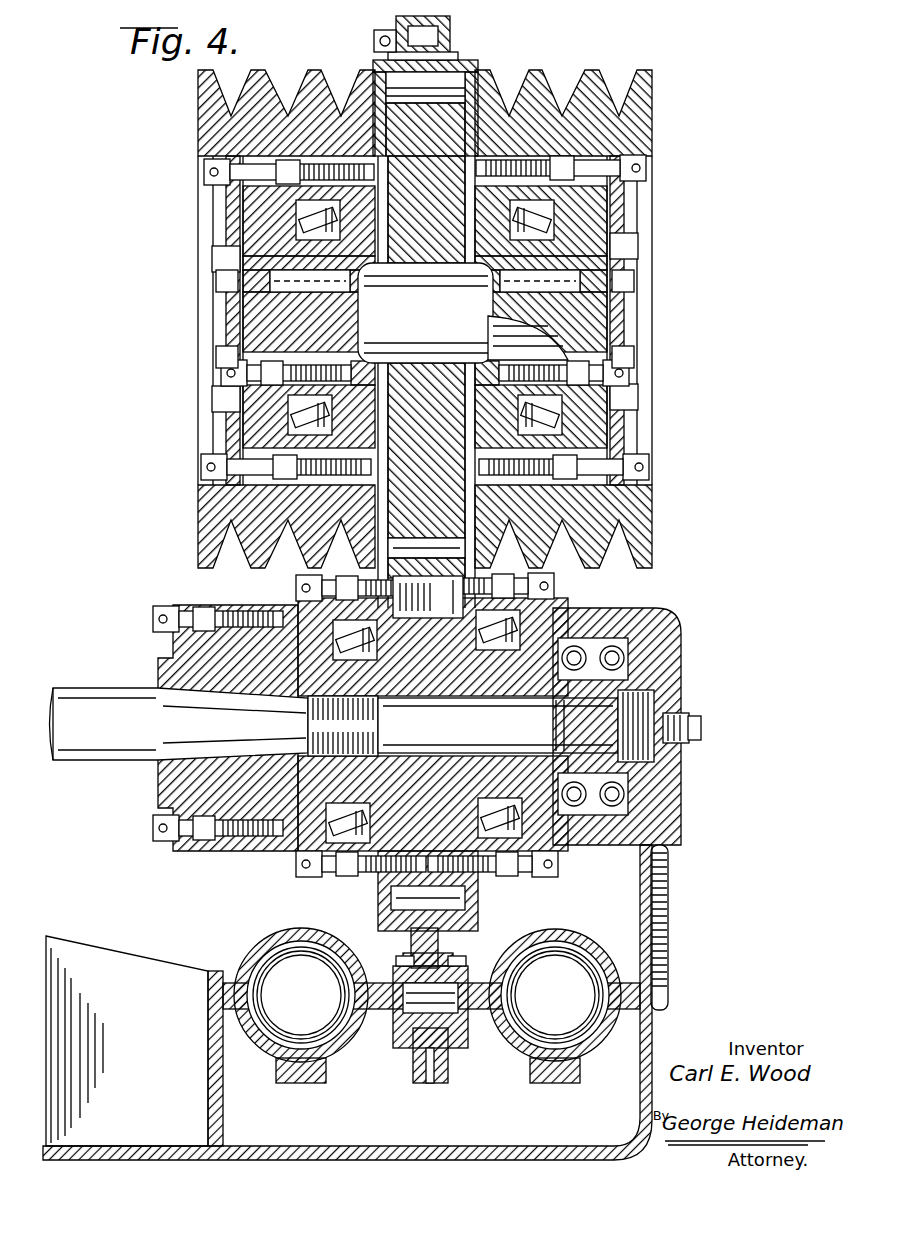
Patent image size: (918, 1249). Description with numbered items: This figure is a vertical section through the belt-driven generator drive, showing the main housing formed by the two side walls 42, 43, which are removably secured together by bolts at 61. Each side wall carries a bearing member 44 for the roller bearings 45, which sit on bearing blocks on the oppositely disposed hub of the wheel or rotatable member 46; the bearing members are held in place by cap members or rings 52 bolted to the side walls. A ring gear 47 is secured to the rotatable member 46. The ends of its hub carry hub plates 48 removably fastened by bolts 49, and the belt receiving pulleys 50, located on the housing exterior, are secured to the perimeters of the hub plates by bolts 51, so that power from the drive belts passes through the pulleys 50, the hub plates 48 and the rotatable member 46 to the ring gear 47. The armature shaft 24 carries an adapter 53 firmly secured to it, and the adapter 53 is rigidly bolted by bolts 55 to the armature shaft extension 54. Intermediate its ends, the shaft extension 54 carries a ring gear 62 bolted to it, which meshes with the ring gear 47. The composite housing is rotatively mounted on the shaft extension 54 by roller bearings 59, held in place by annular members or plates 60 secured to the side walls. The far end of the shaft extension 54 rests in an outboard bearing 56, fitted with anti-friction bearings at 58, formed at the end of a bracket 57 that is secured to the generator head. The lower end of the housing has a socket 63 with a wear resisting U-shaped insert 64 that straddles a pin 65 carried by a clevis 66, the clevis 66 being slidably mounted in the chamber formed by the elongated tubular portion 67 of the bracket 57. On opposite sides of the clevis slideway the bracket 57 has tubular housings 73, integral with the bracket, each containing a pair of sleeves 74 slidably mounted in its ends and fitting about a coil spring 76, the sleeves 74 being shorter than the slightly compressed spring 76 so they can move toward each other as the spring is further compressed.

The armature shaft 24 is at (50, 755).
The main side wall 42 is at (468, 56).
The main side wall 43 is at (368, 53).
The bearing member 44 is at (320, 158).
The roller bearing 45 is at (375, 258).
The rotatable member 46 is at (420, 375).
The ring gear 47 is at (398, 90).
The hub plate 48 is at (625, 280).
The bolt 49 is at (215, 300).
The belt receiving pulley 50 is at (184, 96).
The bolt 51 is at (205, 172).
The cap member 52 is at (220, 210).
The adapter 53 is at (158, 765).
The armature shaft extension 54 is at (232, 843).
The bolt 55 is at (145, 612).
The outboard bearing 56 is at (673, 640).
The bracket 57 is at (632, 1085).
The anti-friction bearing 58 is at (603, 663).
The roller bearing 59 is at (332, 612).
The annular member 60 is at (296, 575).
The bolt 61 is at (290, 582).
The ring gear 62 is at (460, 560).
The socket 63 is at (432, 948).
The U-shaped insert 64 is at (446, 955).
The pin 65 is at (428, 1055).
The clevis 66 is at (392, 952).
The tubular portion 67 is at (386, 1035).
The tubular housing 73 is at (240, 945).
The sleeve 74 is at (262, 936).
The coil spring 76 is at (238, 1020).